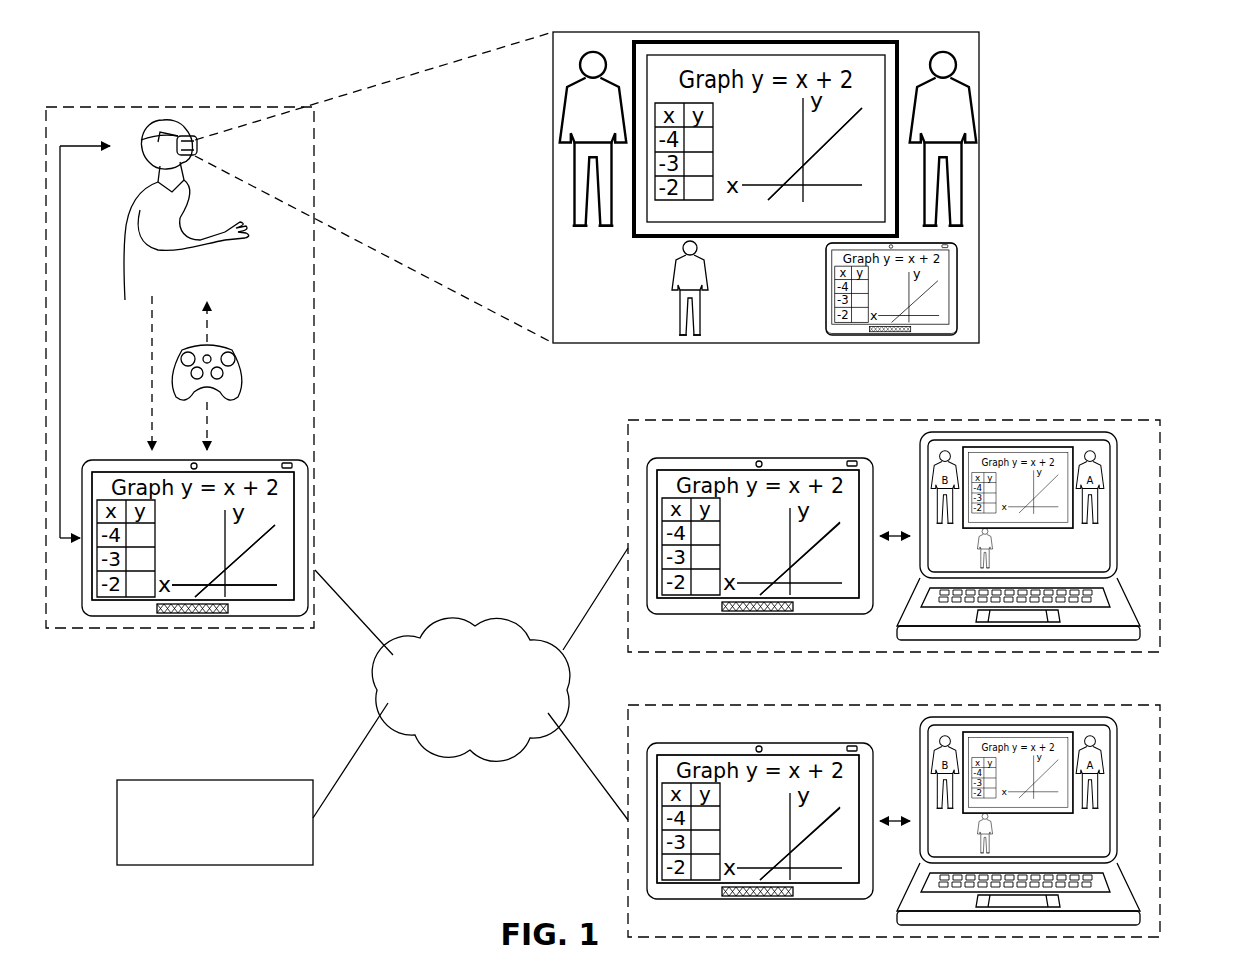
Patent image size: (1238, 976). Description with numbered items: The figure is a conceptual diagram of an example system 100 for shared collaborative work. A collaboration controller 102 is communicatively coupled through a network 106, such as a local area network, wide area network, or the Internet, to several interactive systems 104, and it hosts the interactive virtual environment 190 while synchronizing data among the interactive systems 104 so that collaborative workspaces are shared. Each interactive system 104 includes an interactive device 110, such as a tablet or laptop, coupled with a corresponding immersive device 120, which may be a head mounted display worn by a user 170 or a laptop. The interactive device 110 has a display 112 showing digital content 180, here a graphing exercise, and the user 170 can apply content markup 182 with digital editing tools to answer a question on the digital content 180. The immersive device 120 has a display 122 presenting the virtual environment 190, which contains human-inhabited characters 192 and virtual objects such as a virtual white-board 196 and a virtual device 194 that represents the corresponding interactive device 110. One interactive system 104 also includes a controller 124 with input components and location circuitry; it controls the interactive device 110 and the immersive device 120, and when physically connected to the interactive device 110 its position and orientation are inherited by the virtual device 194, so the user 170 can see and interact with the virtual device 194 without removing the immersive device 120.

The system 100 is at (100, 56).
The collaboration controller 102 is at (215, 822).
The interactive system 104 is at (120, 107).
The network 106 is at (471, 689).
The interactive device 110 is at (310, 512).
The display 112 is at (305, 488).
The immersive device 120 is at (195, 134).
The display 122 is at (980, 175).
The controller 124 is at (244, 362).
The user 170 is at (135, 132).
The digital content 180 is at (292, 478).
The content markup 182 is at (278, 540).
The virtual environment 190 is at (972, 243).
The human-inhabited character 192 is at (568, 93).
The virtual device 194 is at (958, 262).
The virtual white-board 196 is at (900, 57).